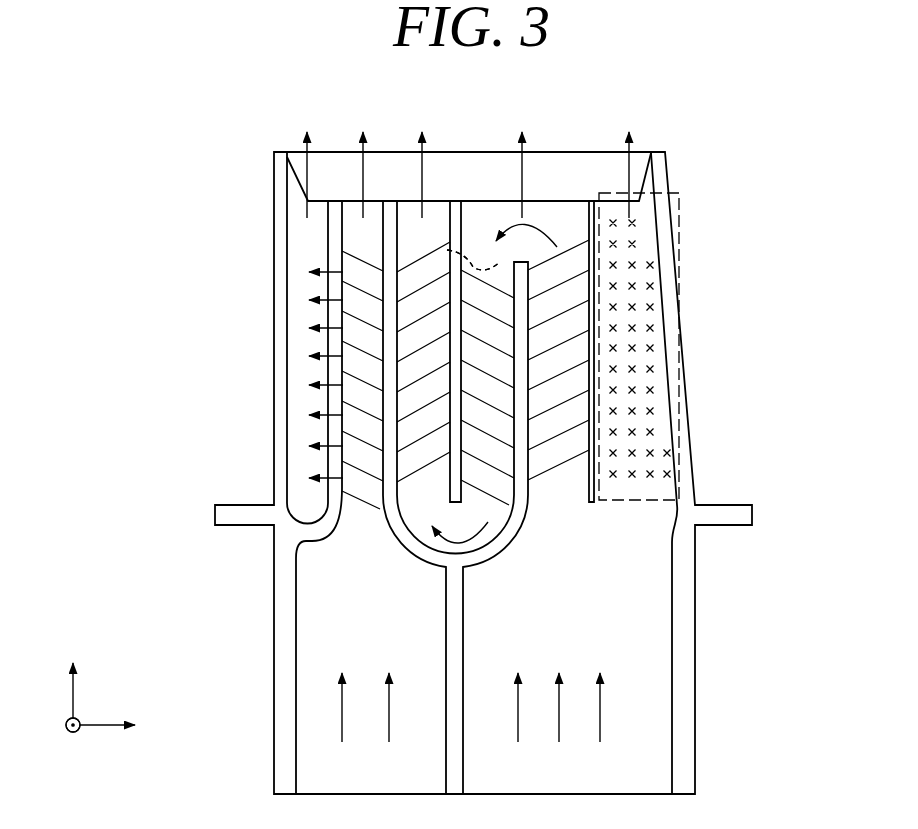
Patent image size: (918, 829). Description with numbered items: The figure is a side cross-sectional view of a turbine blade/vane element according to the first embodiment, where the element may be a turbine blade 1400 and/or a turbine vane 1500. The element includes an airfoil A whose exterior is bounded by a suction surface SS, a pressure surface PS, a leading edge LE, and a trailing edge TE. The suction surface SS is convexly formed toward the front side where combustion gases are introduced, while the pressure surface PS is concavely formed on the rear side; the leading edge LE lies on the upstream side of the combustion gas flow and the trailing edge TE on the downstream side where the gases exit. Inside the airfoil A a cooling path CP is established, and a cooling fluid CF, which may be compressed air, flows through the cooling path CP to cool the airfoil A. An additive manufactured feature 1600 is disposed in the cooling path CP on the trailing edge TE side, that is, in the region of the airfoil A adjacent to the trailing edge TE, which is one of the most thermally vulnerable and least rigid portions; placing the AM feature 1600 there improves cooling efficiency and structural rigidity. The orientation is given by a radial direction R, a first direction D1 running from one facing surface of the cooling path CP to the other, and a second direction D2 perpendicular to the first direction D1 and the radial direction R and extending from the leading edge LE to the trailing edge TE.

The additive manufactured feature 1600 is at (649, 233).
The trailing edge TE is at (667, 272).
The leading edge LE is at (279, 395).
The airfoil A is at (262, 347).
The turbine blade 1400 is at (312, 497).
The turbine vane 1500 is at (527, 353).
The pressure surface PS is at (473, 262).
The suction surface SS is at (473, 260).
The cooling path CP is at (580, 548).
The cooling fluid CF is at (602, 708).
The radial direction R is at (72, 671).
The first direction D1 is at (68, 745).
The second direction D2 is at (139, 730).